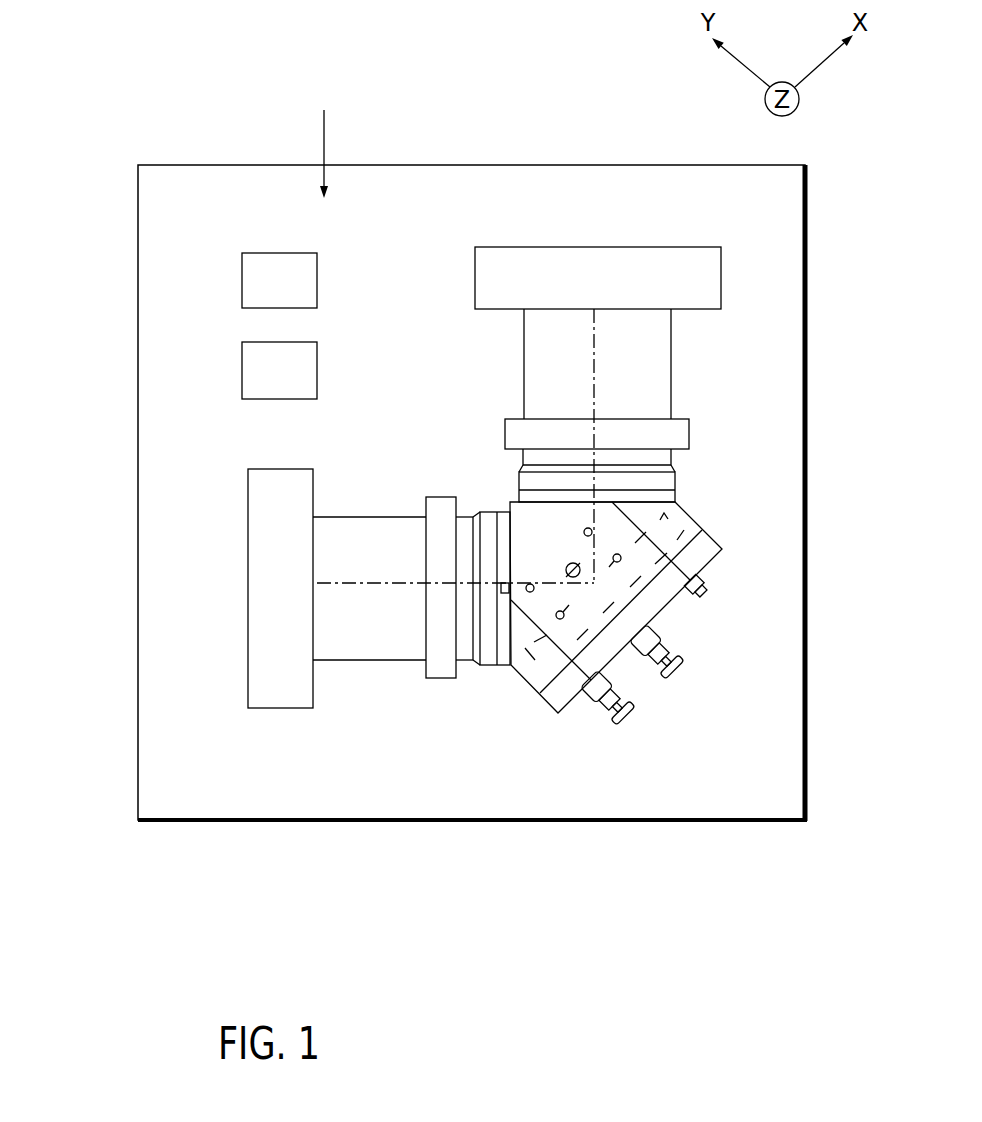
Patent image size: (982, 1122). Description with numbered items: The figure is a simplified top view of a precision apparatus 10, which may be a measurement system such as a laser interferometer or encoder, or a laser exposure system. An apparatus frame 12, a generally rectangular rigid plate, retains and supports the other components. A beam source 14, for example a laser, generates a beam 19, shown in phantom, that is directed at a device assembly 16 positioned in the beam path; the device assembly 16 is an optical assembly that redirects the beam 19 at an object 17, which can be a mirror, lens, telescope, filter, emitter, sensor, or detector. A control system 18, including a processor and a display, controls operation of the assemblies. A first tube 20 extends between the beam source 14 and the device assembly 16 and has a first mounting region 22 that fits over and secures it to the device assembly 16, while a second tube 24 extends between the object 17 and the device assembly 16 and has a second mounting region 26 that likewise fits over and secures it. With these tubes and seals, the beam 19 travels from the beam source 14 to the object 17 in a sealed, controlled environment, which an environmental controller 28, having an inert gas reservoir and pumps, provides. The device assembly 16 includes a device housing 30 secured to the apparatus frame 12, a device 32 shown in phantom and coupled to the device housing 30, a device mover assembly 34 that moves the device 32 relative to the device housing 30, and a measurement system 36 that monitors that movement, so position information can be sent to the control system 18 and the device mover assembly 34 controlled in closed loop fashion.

The precision apparatus 10 is at (497, 137).
The apparatus frame 12 is at (325, 138).
The beam source 14 is at (257, 632).
The device assembly 16 is at (709, 516).
The object 17 is at (610, 262).
The control system 18 is at (266, 385).
The beam 19 is at (369, 583).
The first tube 20 is at (380, 625).
The first mounting region 22 is at (442, 678).
The second tube 24 is at (612, 362).
The second mounting region 26 is at (682, 441).
The environmental controller 28 is at (252, 280).
The device housing 30 is at (570, 702).
The device 32 is at (562, 627).
The device mover assembly 34 is at (641, 718).
The measurement system 36 is at (716, 591).